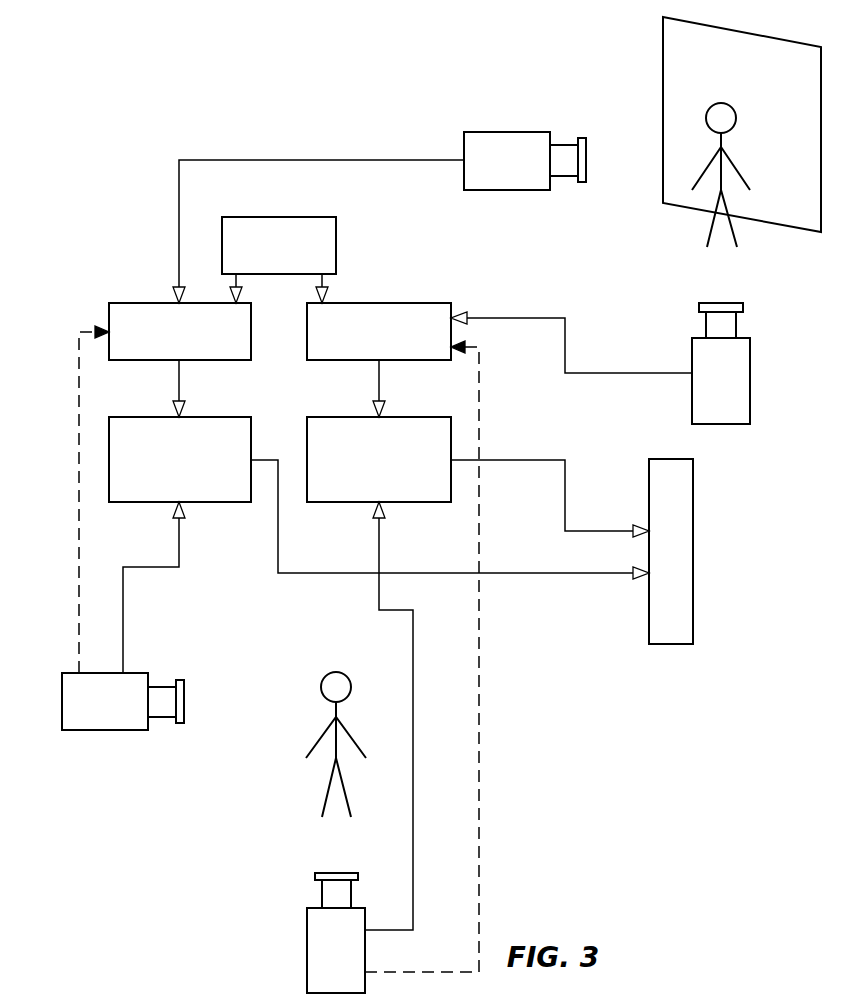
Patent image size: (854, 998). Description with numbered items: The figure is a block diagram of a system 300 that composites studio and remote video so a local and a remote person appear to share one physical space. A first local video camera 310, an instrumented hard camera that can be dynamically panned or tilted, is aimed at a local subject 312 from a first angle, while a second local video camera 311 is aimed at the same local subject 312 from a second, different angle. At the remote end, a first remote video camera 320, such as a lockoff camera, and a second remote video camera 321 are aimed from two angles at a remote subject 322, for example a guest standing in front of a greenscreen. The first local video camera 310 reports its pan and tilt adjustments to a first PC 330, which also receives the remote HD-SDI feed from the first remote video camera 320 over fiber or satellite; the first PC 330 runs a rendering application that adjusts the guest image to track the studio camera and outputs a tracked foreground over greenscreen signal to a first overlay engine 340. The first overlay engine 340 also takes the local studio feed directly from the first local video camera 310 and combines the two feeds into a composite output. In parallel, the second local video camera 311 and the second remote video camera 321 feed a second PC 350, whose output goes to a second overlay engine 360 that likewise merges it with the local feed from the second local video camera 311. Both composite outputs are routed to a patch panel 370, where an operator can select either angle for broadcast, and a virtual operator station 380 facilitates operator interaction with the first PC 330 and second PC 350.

The system 300 is at (229, 126).
The first local video camera 310 is at (91, 709).
The second local video camera 311 is at (322, 958).
The local subject 312 is at (343, 672).
The first remote video camera 320 is at (493, 168).
The second remote video camera 321 is at (707, 389).
The remote subject 322 is at (731, 104).
The first PC 330 is at (165, 339).
The first overlay engine 340 is at (165, 468).
The second PC 350 is at (365, 339).
The second overlay engine 360 is at (365, 468).
The patch panel 370 is at (682, 644).
The virtual operator station 380 is at (265, 254).